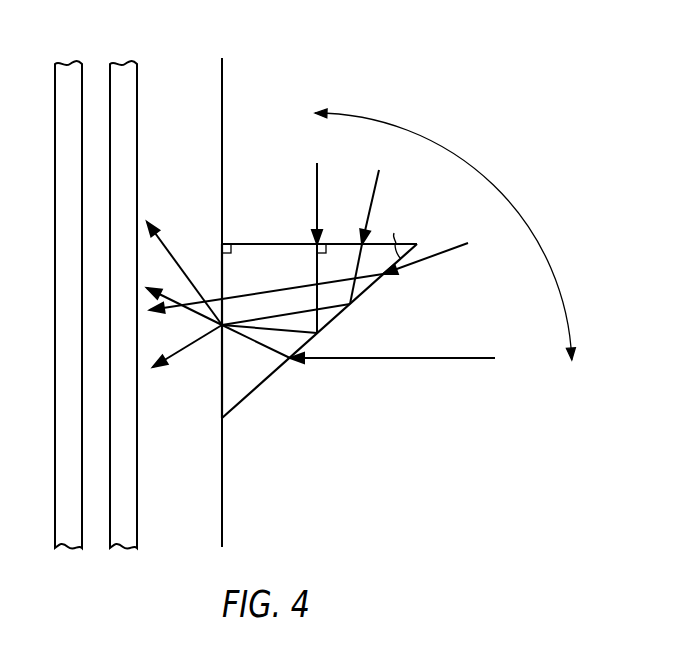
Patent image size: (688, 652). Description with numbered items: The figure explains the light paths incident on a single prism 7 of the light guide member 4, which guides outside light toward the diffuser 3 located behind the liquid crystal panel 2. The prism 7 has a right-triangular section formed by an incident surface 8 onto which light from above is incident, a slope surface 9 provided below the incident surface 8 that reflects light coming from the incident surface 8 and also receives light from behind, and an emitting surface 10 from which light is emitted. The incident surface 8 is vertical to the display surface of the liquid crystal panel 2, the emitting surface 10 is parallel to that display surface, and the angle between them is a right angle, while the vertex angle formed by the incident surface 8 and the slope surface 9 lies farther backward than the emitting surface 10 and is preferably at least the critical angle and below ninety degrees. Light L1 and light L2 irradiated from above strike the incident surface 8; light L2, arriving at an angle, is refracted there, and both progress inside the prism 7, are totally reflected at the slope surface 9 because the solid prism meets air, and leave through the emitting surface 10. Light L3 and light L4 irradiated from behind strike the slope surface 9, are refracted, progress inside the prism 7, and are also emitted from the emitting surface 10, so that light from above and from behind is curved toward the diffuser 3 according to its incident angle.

The liquid crystal panel 2 is at (68, 64).
The diffuser 3 is at (125, 64).
The light guide member 4 is at (311, 251).
The prism 7 is at (247, 266).
The incident surface 8 is at (276, 243).
The slope surface 9 is at (340, 312).
The emitting surface 10 is at (221, 364).
The light L1 is at (234, 234).
The light L2 is at (272, 273).
The light L3 is at (324, 285).
The light L4 is at (336, 282).